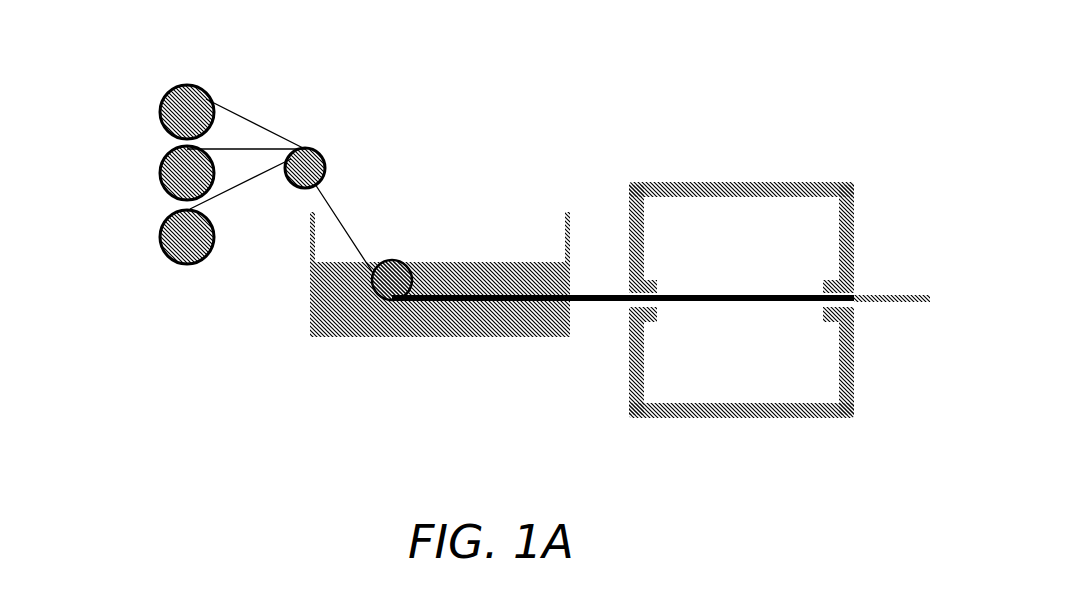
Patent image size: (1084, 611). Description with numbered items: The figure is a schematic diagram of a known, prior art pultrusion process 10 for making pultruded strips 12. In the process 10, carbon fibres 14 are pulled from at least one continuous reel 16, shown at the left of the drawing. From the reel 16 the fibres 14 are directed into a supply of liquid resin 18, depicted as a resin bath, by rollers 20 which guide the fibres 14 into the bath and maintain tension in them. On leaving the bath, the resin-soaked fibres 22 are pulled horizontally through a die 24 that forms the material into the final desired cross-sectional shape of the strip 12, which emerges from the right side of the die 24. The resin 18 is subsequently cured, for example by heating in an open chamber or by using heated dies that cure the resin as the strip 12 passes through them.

The pultrusion process 10 is at (781, 96).
The pultruded strip 12 is at (908, 298).
The carbon fibres 14 is at (342, 198).
The continuous reel 16 is at (161, 228).
The liquid resin 18 is at (358, 312).
The rollers 20 is at (412, 263).
The resin-soaked fibres 22 is at (605, 302).
The die 24 is at (753, 377).